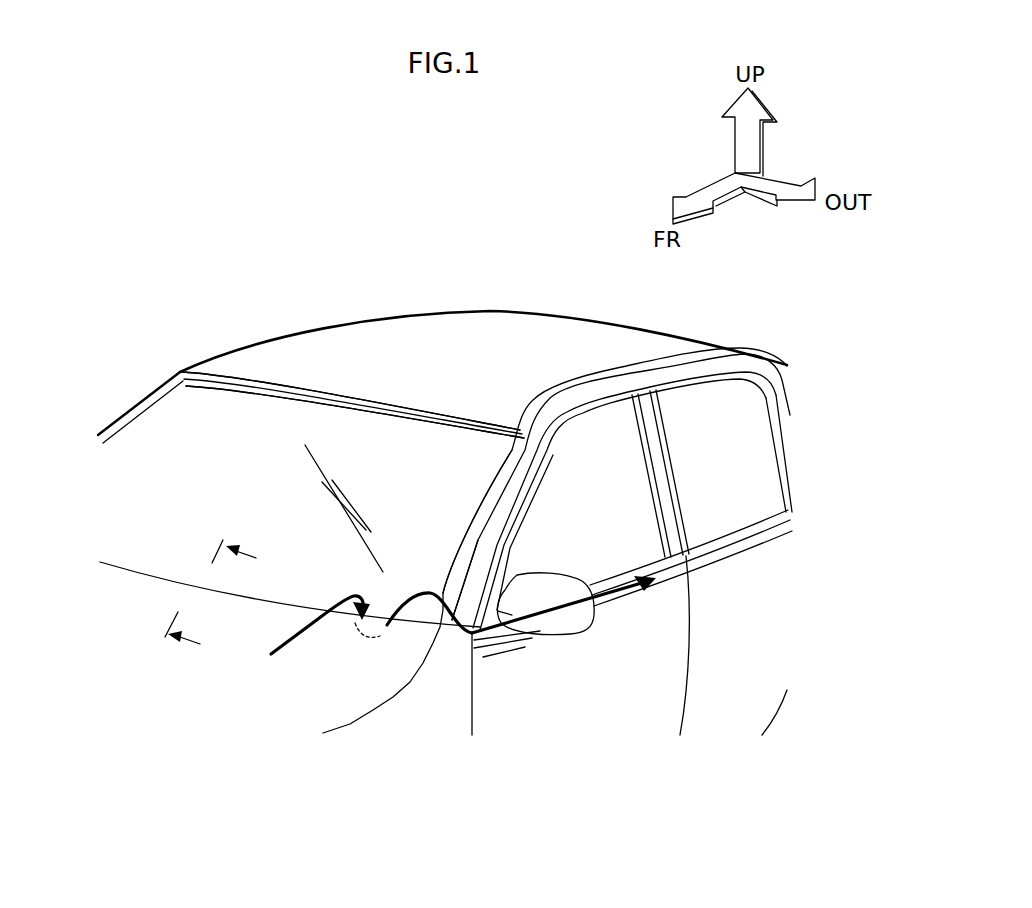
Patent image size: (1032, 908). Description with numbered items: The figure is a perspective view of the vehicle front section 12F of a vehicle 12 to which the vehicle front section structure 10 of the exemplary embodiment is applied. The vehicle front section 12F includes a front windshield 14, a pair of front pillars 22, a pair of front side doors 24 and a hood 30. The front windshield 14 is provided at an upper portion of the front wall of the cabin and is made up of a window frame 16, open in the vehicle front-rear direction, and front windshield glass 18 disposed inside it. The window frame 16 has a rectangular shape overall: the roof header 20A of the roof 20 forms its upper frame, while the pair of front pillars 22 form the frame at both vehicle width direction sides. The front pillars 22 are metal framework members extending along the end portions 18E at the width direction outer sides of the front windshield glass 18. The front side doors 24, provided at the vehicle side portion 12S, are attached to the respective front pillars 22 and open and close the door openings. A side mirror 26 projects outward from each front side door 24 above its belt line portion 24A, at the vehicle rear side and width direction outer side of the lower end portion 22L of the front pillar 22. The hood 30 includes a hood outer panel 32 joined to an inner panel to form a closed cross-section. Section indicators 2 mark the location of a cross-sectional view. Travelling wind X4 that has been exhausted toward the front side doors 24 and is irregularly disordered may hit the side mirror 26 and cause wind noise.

The vehicle front section structure 10 is at (325, 680).
The vehicle 12 is at (545, 303).
The vehicle front section 12F is at (87, 391).
The vehicle side portion 12S is at (749, 617).
The front windshield 14 is at (193, 288).
The window frame 16 is at (263, 377).
The front windshield glass 18 is at (216, 428).
The end portions 18E is at (140, 428).
The roof 20 is at (433, 336).
The roof header 20A is at (350, 393).
The front pillars 22 is at (175, 375).
The lower end portion 22L is at (450, 625).
The front side doors 24 is at (578, 697).
The belt line portion 24A is at (507, 643).
The side mirror 26 is at (550, 588).
The hood 30 is at (172, 672).
The hood outer panel 32 is at (205, 713).
The section line 2 is at (220, 599).
The travelling wind X4 is at (620, 603).